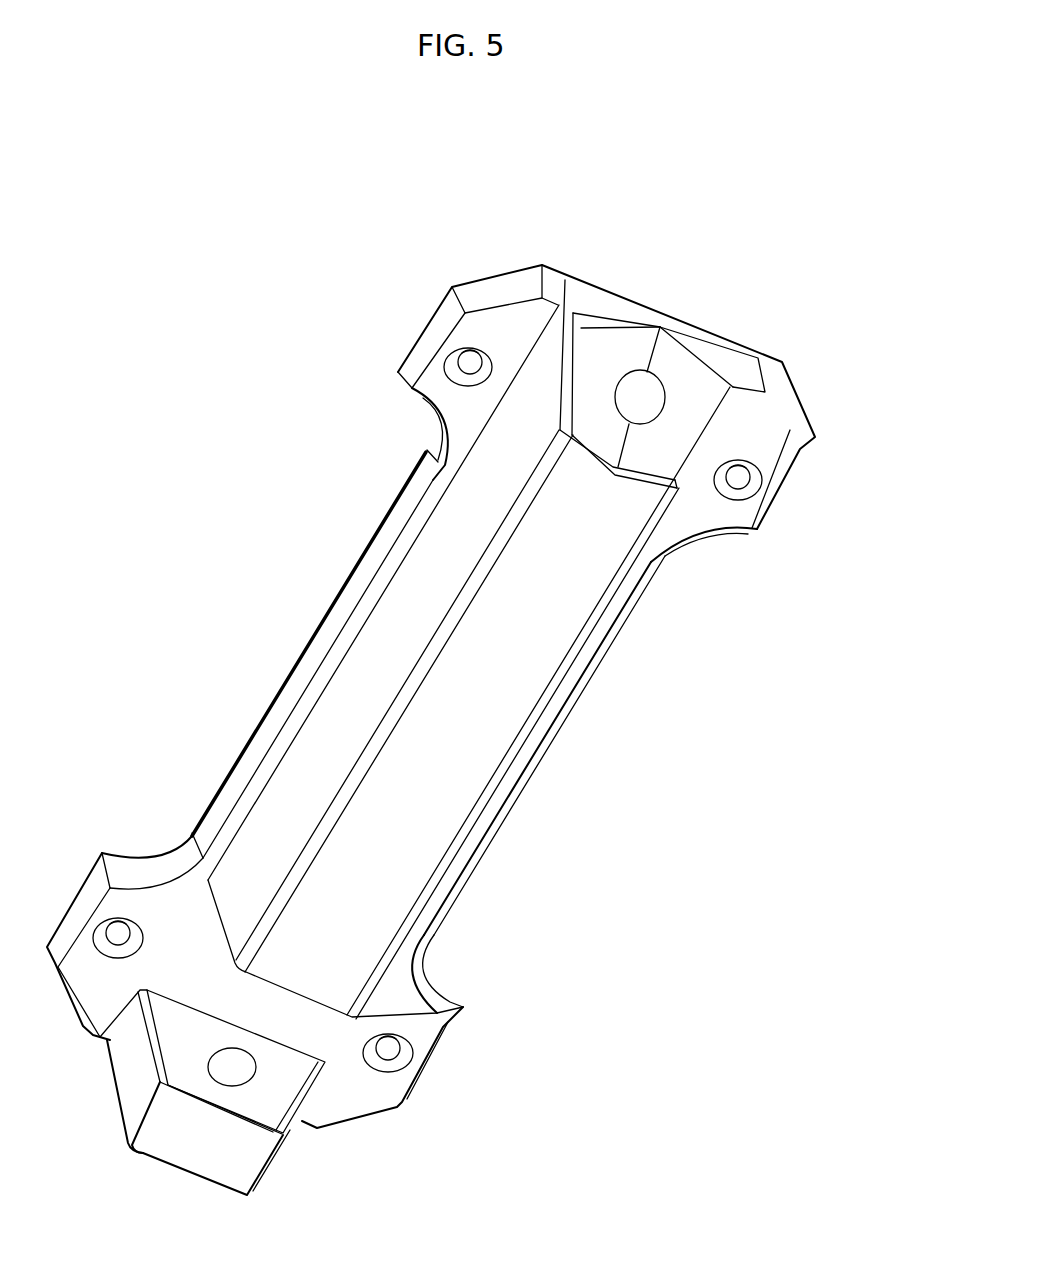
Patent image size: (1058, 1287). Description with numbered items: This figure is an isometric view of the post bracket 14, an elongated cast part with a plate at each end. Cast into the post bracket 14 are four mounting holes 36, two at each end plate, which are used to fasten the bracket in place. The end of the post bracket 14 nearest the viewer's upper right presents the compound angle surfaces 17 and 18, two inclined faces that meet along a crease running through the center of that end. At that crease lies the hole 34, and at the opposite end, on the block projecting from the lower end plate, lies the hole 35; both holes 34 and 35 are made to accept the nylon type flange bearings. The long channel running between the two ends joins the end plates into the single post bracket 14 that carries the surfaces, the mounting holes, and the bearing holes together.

The post bracket 14 is at (331, 609).
The compound angle surface 17 is at (605, 359).
The compound angle surface 18 is at (692, 400).
The hole 34 is at (640, 397).
The hole 35 is at (228, 1064).
The mounting holes 36 is at (738, 483).